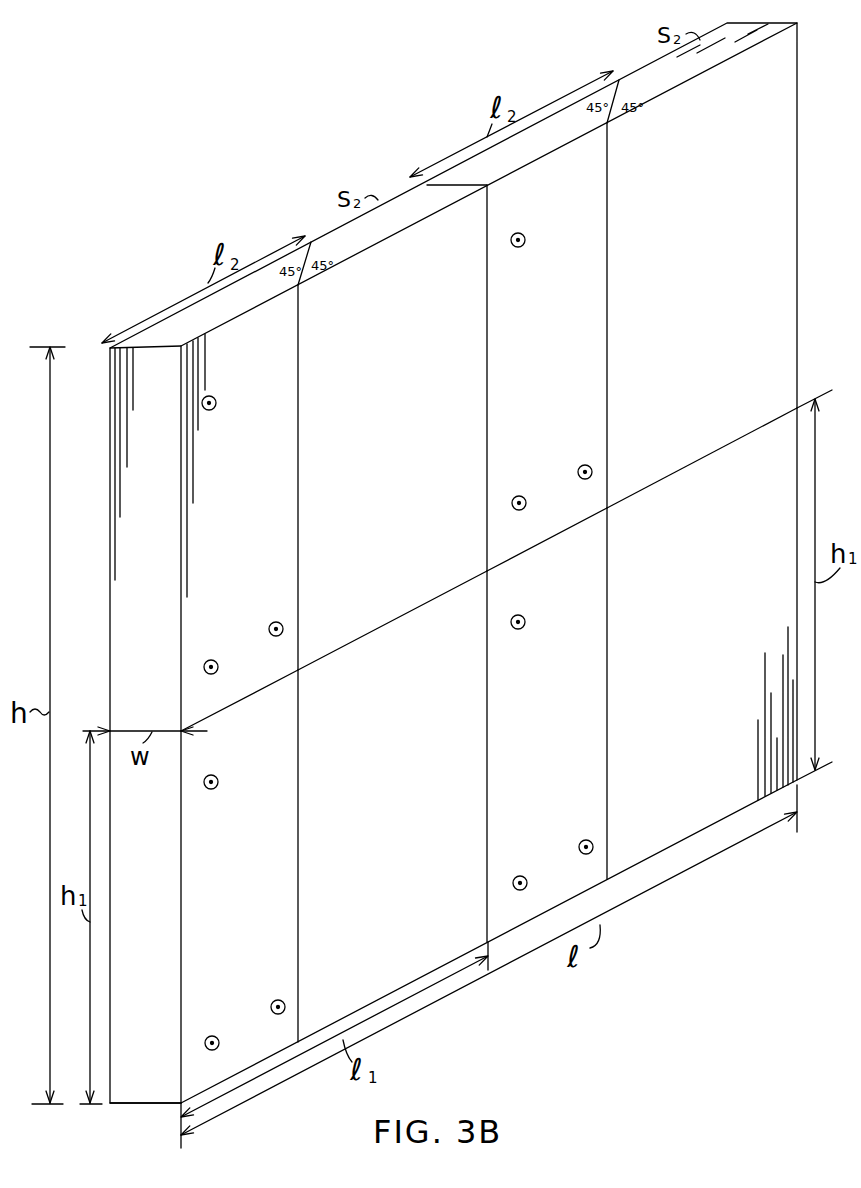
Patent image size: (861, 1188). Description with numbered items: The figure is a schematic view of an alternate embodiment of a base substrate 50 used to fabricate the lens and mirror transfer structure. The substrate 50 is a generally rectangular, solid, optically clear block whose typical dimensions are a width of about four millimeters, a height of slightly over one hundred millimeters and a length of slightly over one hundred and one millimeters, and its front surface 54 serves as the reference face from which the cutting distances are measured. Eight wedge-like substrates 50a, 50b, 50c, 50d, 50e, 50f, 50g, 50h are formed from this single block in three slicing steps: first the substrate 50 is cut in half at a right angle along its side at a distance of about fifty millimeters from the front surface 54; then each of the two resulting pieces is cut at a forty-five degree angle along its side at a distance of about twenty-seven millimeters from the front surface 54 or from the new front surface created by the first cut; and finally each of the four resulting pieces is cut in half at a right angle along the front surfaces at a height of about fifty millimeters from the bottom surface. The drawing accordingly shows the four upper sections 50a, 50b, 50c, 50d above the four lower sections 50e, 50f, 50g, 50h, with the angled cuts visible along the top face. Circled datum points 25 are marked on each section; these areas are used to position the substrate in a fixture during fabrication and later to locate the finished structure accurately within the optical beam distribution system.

The base substrate 50 is at (282, 196).
The wedge-like substrate 50a is at (283, 575).
The wedge-like substrate 50b is at (443, 469).
The wedge-like substrate 50c is at (585, 388).
The wedge-like substrate 50d is at (758, 286).
The wedge-like substrate 50e is at (283, 910).
The wedge-like substrate 50f is at (443, 822).
The wedge-like substrate 50g is at (585, 742).
The wedge-like substrate 50h is at (756, 648).
The datum points 25 is at (216, 400).
The front surface 54 is at (136, 1090).